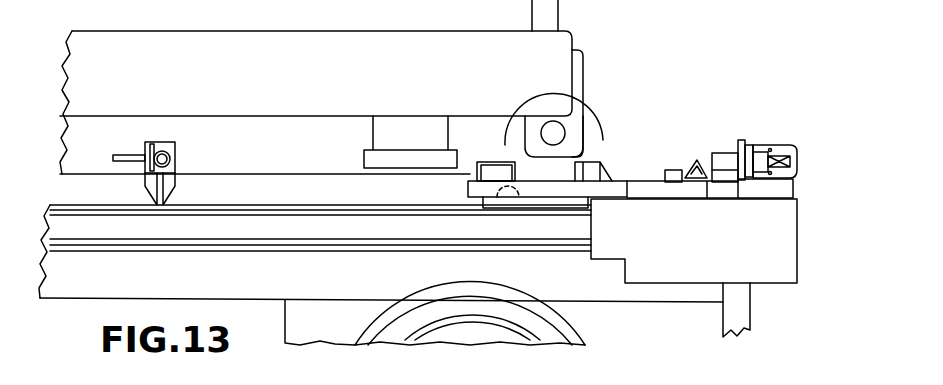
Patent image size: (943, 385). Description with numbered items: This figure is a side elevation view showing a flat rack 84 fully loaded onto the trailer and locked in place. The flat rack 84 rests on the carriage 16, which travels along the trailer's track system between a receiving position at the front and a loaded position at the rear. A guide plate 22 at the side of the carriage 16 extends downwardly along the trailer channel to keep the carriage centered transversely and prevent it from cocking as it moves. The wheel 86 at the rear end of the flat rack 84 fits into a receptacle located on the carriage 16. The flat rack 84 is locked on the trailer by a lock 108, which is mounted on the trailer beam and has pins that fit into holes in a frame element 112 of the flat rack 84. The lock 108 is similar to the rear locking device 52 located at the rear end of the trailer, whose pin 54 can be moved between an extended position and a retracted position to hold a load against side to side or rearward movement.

The flat rack 84 is at (357, 29).
The frame element 112 is at (283, 128).
The lock 108 is at (165, 138).
The wheel 86 is at (603, 130).
The carriage 16 is at (786, 285).
The guide plate 22 is at (675, 270).
The pin 54 is at (730, 151).
The rear locking device 52 is at (788, 140).